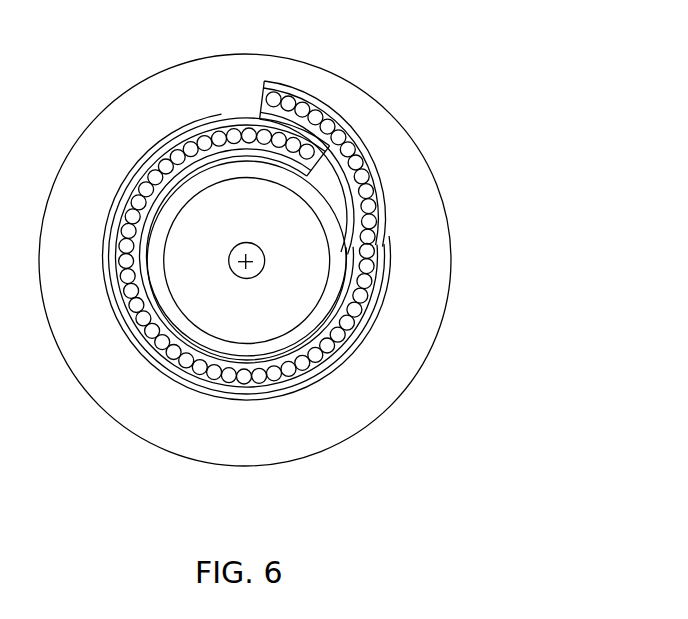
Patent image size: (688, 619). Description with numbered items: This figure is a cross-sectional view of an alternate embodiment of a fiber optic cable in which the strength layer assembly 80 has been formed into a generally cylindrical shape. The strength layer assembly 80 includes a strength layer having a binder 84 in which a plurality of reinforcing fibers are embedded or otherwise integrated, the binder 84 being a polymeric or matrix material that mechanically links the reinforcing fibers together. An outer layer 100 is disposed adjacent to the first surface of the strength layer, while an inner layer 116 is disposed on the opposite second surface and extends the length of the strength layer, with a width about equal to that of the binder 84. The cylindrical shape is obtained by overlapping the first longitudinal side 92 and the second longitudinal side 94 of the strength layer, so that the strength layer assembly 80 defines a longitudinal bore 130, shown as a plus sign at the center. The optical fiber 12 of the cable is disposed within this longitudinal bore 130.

The optical fiber 12 is at (157, 334).
The strength layer assembly 80 is at (392, 234).
The binder 84 is at (367, 300).
The first longitudinal side 92 is at (371, 136).
The second longitudinal side 94 is at (317, 138).
The outer layer 100 is at (390, 193).
The inner layer 116 is at (333, 294).
The longitudinal bore 130 is at (246, 262).